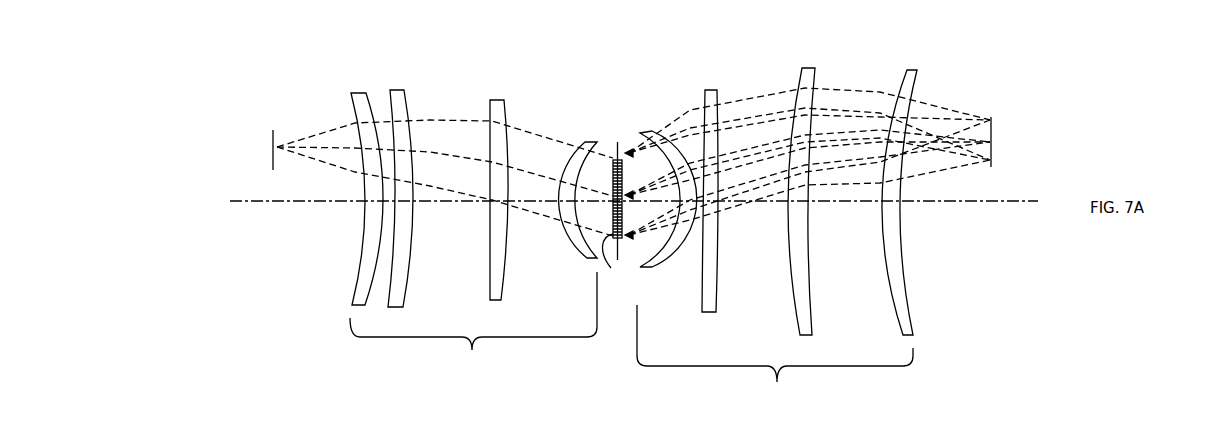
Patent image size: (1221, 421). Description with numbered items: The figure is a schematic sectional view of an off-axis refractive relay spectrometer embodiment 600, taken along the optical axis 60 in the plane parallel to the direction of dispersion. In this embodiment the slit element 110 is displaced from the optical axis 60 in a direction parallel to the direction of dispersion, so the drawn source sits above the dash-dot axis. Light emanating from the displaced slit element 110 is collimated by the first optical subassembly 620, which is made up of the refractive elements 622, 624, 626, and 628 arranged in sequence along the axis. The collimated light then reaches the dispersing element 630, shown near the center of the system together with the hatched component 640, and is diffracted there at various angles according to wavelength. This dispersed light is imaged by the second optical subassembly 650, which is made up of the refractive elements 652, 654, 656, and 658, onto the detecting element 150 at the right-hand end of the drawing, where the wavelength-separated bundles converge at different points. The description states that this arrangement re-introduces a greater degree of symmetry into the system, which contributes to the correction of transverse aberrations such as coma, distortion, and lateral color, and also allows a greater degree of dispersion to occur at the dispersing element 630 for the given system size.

The optical axis 60 is at (254, 203).
The off-axis refractive relay spectrometer embodiment 600 is at (307, 62).
The slit element 110 is at (273, 130).
The first optical subassembly 620 is at (469, 217).
The refractive element 622 is at (357, 93).
The refractive element 624 is at (398, 90).
The refractive element 626 is at (497, 100).
The refractive element 628 is at (590, 142).
The beam steering element 640 is at (617, 142).
The dispersing element 630 is at (617, 267).
The second optical subassembly 650 is at (783, 220).
The refractive element 652 is at (645, 131).
The refractive element 654 is at (710, 90).
The refractive element 656 is at (808, 68).
The refractive element 658 is at (912, 70).
The detecting element 150 is at (992, 117).